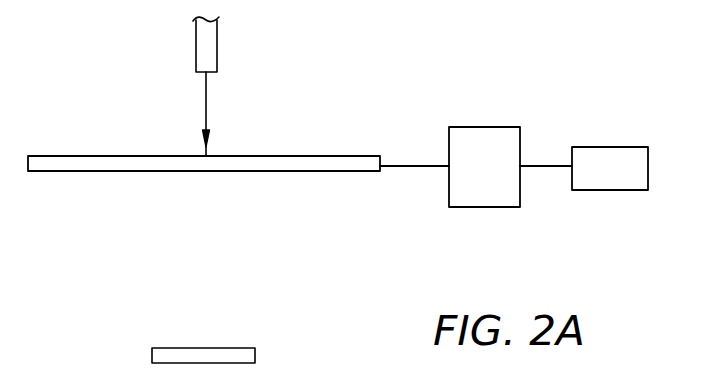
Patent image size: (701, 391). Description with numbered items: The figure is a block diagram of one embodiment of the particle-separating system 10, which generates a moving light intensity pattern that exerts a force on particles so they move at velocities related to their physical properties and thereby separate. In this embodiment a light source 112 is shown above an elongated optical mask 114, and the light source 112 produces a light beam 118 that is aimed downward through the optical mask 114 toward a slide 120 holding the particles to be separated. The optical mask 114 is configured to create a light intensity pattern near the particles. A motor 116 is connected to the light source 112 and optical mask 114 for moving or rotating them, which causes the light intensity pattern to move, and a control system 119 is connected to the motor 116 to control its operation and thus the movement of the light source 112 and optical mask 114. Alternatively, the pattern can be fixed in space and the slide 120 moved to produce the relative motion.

The system 10 is at (92, 267).
The light source 112 is at (195, 49).
The optical mask 114 is at (77, 156).
The motor 116 is at (480, 127).
The light beam 118 is at (206, 105).
The control system 119 is at (609, 147).
The slide 120 is at (218, 348).